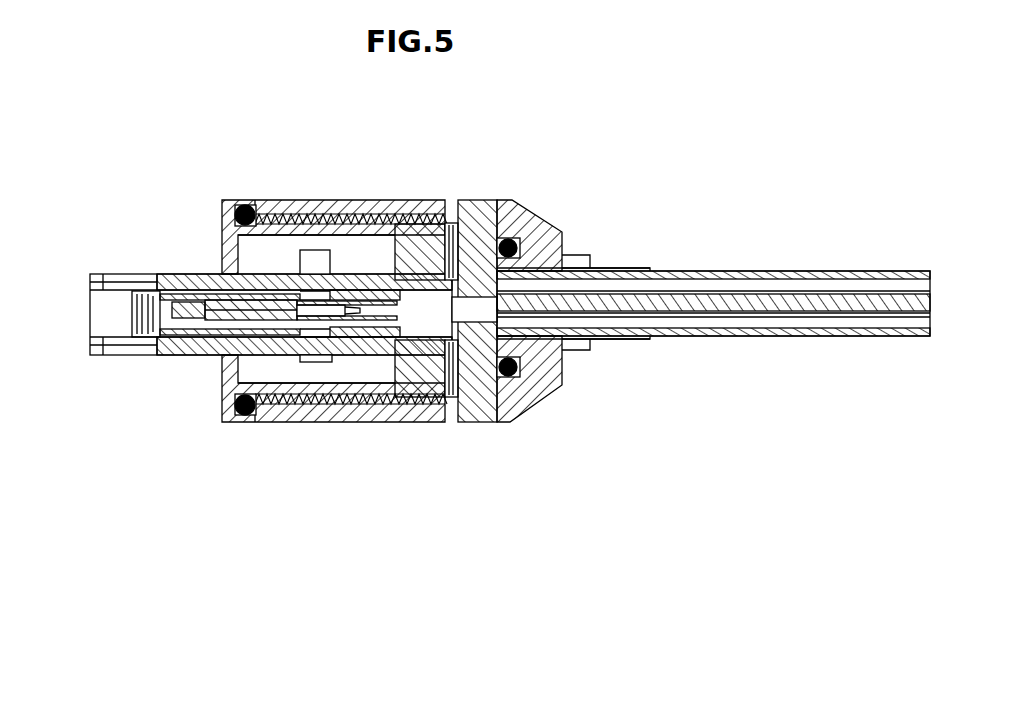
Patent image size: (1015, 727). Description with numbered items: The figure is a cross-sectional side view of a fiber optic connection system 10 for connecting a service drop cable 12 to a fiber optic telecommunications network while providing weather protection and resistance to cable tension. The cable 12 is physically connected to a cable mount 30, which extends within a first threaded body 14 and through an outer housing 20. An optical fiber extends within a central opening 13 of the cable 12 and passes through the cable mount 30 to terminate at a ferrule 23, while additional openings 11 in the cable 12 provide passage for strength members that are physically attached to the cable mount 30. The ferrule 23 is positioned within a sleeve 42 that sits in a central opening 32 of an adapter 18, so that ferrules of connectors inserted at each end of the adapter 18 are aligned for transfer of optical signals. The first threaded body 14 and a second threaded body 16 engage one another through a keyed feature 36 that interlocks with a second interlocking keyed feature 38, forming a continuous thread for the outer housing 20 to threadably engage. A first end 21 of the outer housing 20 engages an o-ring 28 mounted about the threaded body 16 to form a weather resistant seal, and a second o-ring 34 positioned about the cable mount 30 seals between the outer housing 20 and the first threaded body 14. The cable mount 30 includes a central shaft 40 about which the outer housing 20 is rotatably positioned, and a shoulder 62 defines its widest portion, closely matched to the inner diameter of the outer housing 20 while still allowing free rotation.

The fiber optic connection system 10 is at (428, 482).
The additional openings 11 is at (925, 282).
The service drop cable 12 is at (778, 341).
The central opening 13 is at (927, 300).
The first threaded body 14 is at (436, 392).
The second threaded body 16 is at (230, 412).
The adapter 18 is at (178, 276).
The outer housing 20 is at (532, 396).
The first end 21 is at (245, 417).
The ferrule 23 is at (202, 318).
The o-ring 28 is at (243, 207).
The cable mount 30 is at (611, 350).
The central opening 32 is at (172, 312).
The second o-ring 34 is at (507, 240).
The keyed feature 36 is at (317, 260).
The second interlocking keyed feature 38 is at (296, 246).
The central shaft 40 is at (455, 278).
The sleeve 42 is at (178, 318).
The shoulder 62 is at (484, 398).